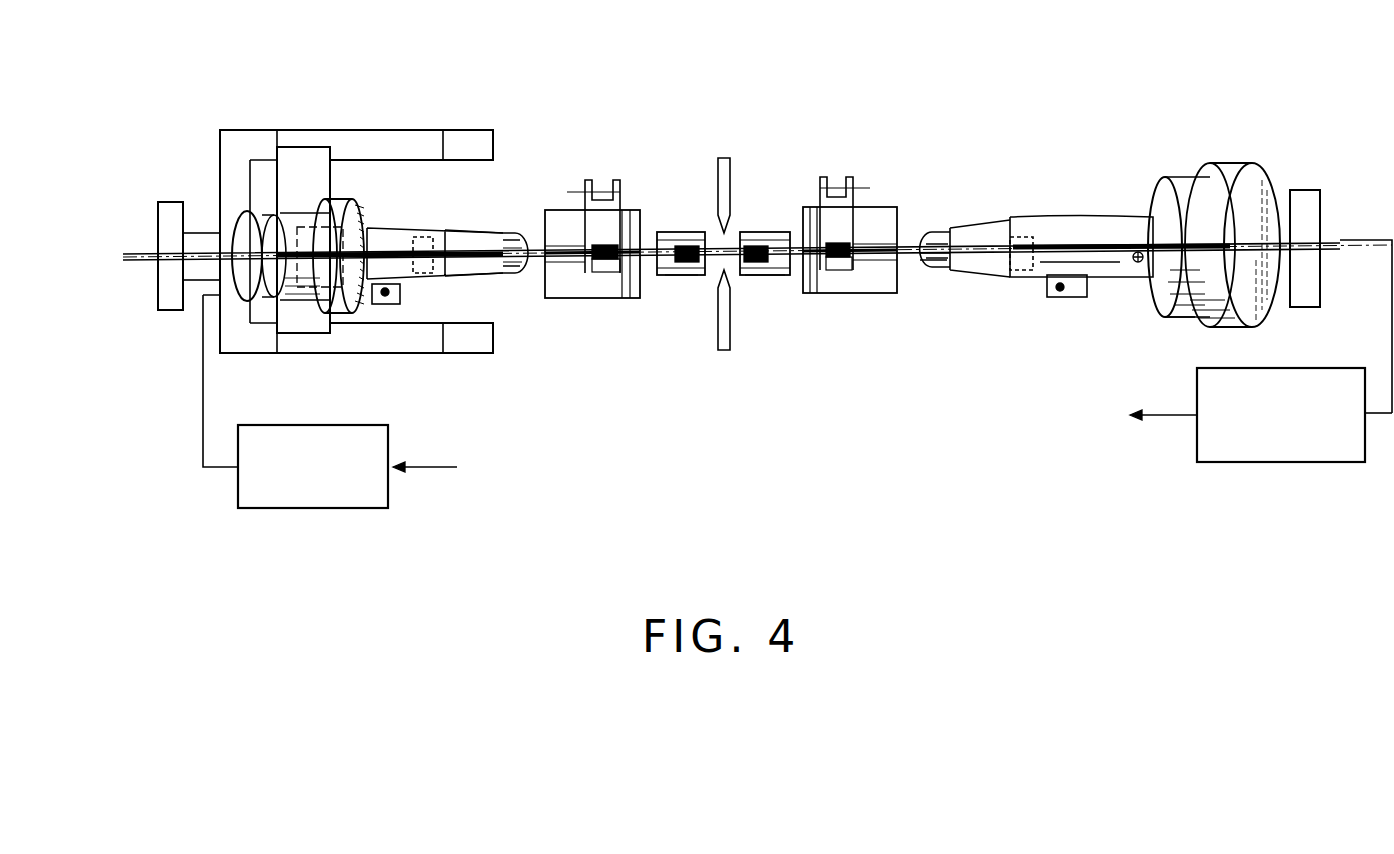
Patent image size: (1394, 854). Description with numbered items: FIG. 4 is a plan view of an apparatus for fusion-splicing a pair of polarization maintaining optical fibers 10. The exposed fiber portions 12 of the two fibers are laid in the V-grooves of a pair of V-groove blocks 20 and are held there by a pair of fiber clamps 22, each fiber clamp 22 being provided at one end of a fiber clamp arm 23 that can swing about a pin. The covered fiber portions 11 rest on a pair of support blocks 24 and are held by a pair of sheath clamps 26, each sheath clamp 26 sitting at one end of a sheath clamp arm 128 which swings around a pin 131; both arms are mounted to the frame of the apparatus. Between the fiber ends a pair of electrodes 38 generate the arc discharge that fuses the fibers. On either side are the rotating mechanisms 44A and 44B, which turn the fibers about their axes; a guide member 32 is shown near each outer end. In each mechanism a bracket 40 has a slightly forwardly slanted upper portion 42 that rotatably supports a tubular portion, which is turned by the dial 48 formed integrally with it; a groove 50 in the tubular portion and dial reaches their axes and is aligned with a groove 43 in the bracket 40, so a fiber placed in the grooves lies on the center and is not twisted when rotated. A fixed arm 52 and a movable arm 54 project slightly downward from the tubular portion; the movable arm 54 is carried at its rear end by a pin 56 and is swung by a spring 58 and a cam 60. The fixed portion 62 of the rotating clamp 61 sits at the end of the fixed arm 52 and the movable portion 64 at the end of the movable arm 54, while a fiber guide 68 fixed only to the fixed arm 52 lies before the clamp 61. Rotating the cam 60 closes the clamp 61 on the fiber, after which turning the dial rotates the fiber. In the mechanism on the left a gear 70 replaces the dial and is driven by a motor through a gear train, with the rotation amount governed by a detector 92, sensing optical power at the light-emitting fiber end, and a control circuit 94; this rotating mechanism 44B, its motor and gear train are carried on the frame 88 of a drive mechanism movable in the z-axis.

The polarization maintaining optical fiber 10 is at (143, 257).
The covered fiber portion 11 is at (548, 214).
The exposed fiber portion 12 is at (665, 234).
The V-groove block 20 is at (680, 277).
The fiber clamp 22 is at (686, 239).
The fiber clamp arm 23 is at (600, 212).
The support block 24 is at (598, 205).
The sheath clamp 26 is at (598, 270).
The fiber guide 32 is at (176, 203).
The electrode 38 is at (720, 172).
The bracket 40 is at (296, 148).
The upper portion of bracket 42 is at (305, 303).
The groove 43 is at (1168, 312).
The rotating mechanism 44A is at (1232, 58).
The rotating mechanism 44B is at (495, 70).
The dial 48 is at (1228, 165).
The groove 50 is at (1248, 310).
The fixed arm 52 is at (410, 230).
The movable arm 54 is at (405, 270).
The pin 56 is at (1136, 252).
The spring 58 is at (1030, 272).
The cam 60 is at (386, 304).
The rotating clamp 61 is at (521, 233).
The fixed portion of clamp 62 is at (510, 238).
The movable portion of clamp 64 is at (520, 275).
The fiber guide 68 is at (472, 276).
The gear 70 is at (356, 216).
The frame 88 is at (435, 353).
The detector 92 is at (1282, 464).
The control circuit 94 is at (310, 510).
The sheath clamp arm 128 is at (612, 275).
The pin 131 is at (567, 192).